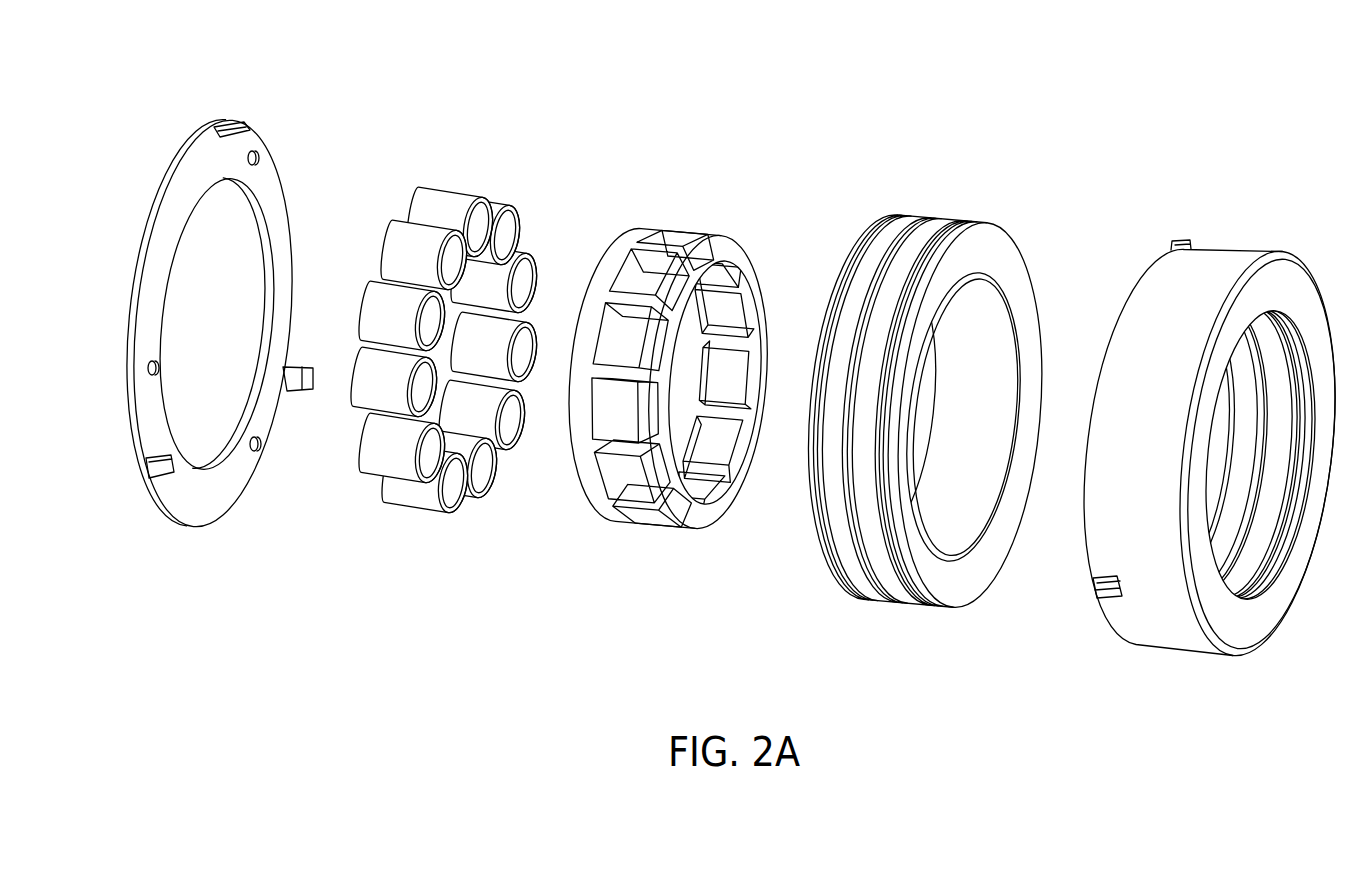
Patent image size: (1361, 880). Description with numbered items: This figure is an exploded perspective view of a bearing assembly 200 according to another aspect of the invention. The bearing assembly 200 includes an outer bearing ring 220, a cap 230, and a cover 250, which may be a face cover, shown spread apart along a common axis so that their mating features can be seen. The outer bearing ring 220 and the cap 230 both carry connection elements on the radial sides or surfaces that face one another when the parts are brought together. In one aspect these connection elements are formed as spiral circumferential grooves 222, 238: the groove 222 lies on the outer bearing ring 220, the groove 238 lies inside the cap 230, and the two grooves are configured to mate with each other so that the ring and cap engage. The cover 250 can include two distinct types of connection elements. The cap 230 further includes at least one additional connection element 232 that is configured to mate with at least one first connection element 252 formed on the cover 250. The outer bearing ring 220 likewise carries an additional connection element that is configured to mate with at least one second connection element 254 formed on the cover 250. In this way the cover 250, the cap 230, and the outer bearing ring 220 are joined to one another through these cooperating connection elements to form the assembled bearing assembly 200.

The bearing assembly 200 is at (690, 166).
The outer bearing ring 220 is at (899, 379).
The spiral circumferential groove 222 is at (840, 478).
The cap 230 is at (1220, 444).
The additional connection element 232 is at (1112, 600).
The spiral circumferential groove 238 is at (1250, 588).
The cover 250 is at (231, 291).
The first connection element 252 is at (233, 123).
The second connection element 254 is at (262, 446).